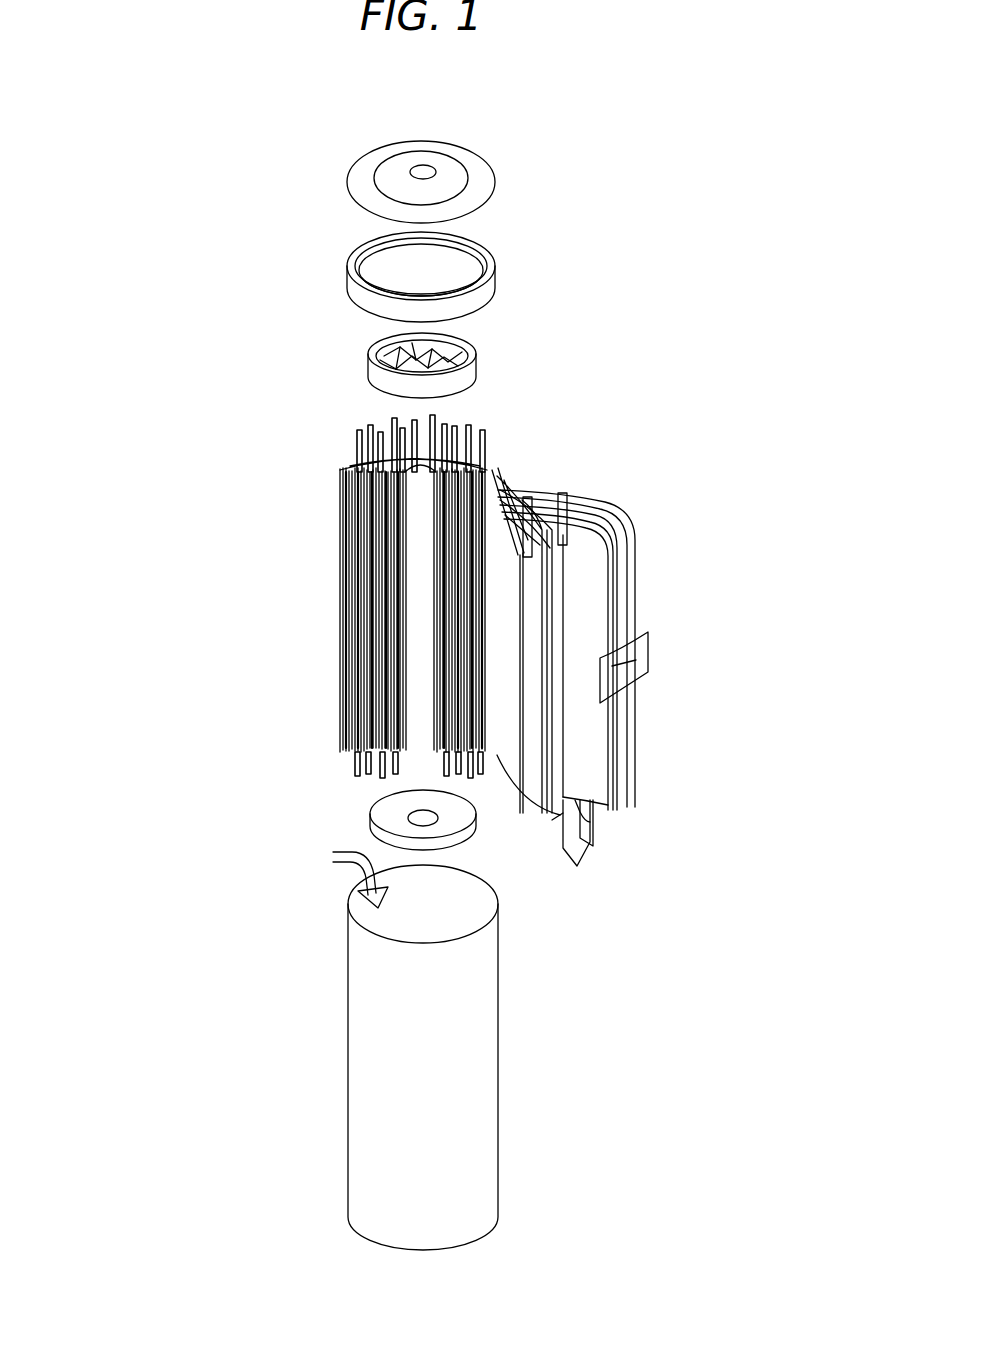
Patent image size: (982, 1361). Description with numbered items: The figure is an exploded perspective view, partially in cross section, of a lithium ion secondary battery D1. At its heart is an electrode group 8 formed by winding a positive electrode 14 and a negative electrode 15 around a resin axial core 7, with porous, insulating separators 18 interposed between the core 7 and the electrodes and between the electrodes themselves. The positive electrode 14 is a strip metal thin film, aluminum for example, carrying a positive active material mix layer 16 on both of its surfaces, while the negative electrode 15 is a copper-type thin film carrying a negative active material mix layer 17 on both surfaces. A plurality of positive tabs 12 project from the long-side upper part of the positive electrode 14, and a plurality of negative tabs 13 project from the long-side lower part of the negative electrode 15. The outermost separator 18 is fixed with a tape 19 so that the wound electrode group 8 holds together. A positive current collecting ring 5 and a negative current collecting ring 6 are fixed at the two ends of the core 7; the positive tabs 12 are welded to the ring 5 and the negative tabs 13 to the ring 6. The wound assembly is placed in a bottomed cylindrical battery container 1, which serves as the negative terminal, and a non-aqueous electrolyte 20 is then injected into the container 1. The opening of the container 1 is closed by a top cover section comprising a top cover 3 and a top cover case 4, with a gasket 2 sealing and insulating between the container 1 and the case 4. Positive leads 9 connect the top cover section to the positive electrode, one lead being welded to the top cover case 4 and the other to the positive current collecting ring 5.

The lithium ion secondary battery D1 is at (163, 178).
The battery container 1 is at (498, 1057).
The gasket 2 is at (494, 284).
The top cover 3 is at (445, 162).
The top cover case 4 is at (488, 178).
The positive current collecting ring 5 is at (470, 368).
The negative current collecting ring 6 is at (460, 830).
The resin axial core 7 is at (425, 780).
The electrode group 8 is at (333, 481).
The positive leads 9 is at (455, 352).
The positive tabs 12 is at (362, 435).
The negative tabs 13 is at (385, 775).
The positive electrode 14 is at (560, 575).
The negative electrode 15 is at (590, 822).
The positive active material mix layer 16 is at (540, 595).
The negative active material mix layer 17 is at (620, 733).
The separators 18 is at (525, 505).
The tape 19 is at (622, 680).
The non-aqueous electrolyte 20 is at (338, 852).